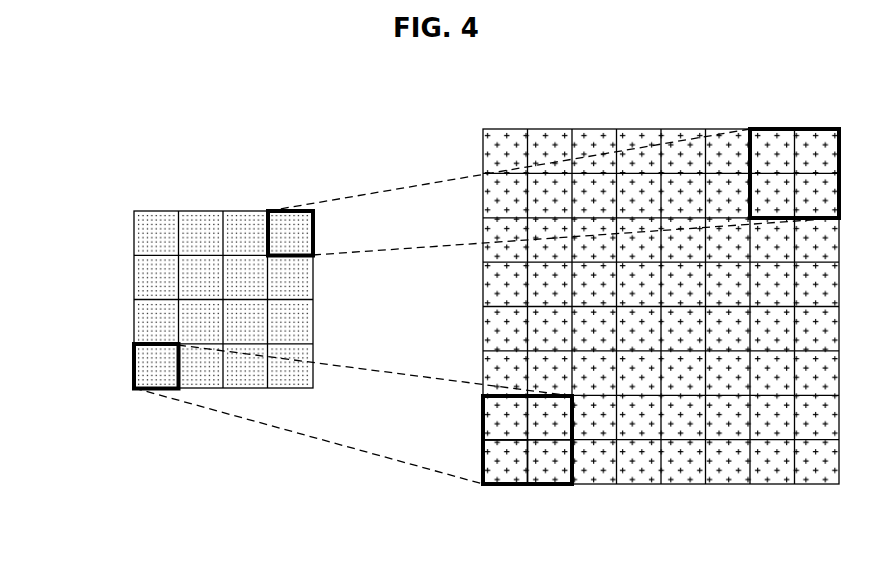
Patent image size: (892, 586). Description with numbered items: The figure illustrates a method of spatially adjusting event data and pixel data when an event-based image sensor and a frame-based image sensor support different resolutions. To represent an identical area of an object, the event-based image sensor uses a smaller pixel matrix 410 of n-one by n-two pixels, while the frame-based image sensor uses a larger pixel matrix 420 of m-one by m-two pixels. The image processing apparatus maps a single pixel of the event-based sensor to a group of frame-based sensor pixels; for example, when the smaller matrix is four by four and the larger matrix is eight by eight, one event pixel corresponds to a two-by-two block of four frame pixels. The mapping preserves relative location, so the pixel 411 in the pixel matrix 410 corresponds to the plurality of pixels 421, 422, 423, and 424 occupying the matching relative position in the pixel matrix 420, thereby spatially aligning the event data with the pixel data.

The pixel matrix 410 is at (134, 211).
The pixel 411 is at (152, 392).
The pixel matrix 420 is at (483, 129).
The pixel 421 is at (497, 420).
The pixel 422 is at (562, 422).
The pixel 423 is at (498, 478).
The pixel 424 is at (553, 478).